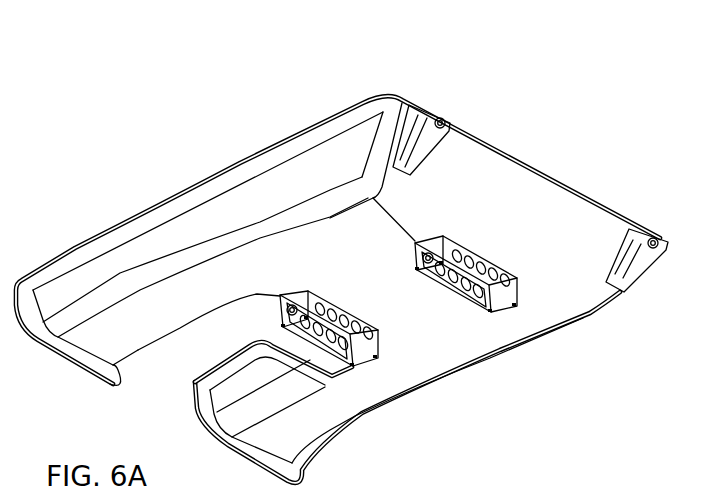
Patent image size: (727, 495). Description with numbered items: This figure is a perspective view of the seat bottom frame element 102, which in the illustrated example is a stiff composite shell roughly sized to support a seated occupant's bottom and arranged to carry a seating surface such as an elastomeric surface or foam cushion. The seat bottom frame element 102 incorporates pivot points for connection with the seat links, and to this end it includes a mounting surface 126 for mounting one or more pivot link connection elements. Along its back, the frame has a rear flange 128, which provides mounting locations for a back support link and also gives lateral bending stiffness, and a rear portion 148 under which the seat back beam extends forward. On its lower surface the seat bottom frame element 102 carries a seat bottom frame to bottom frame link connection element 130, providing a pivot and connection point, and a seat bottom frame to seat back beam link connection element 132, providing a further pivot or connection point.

The seat bottom frame element 102 is at (199, 119).
The rear portion 148 is at (380, 83).
The rear flange 128 is at (480, 183).
The mounting surface 126 is at (352, 274).
The seat bottom frame to bottom frame link connection element 130 is at (290, 323).
The seat bottom frame to seat back beam link connection element 132 is at (487, 298).